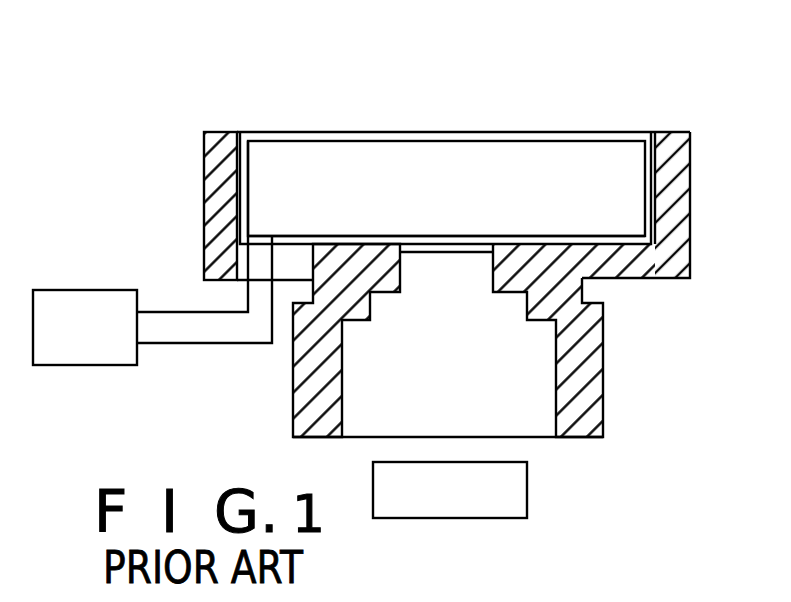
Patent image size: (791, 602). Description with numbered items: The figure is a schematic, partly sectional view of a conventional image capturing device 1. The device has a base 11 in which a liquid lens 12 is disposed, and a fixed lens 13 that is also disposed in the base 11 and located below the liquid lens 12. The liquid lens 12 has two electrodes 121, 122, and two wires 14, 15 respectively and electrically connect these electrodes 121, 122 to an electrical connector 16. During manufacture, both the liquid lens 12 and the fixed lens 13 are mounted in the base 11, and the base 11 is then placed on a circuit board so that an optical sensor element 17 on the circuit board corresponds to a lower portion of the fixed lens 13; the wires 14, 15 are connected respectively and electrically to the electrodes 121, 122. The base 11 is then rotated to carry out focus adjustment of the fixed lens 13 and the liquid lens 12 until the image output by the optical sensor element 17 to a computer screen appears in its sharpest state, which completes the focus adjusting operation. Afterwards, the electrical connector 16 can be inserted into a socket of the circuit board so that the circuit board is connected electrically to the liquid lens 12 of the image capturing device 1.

The image capturing device 1 is at (171, 99).
The base 11 is at (213, 183).
The liquid lens 12 is at (513, 170).
The electrode 121 is at (257, 133).
The electrode 122 is at (287, 236).
The fixed lens 13 is at (537, 375).
The wire 14 is at (183, 310).
The wire 15 is at (210, 345).
The electrical connector 16 is at (62, 350).
The optical sensor element 17 is at (512, 495).